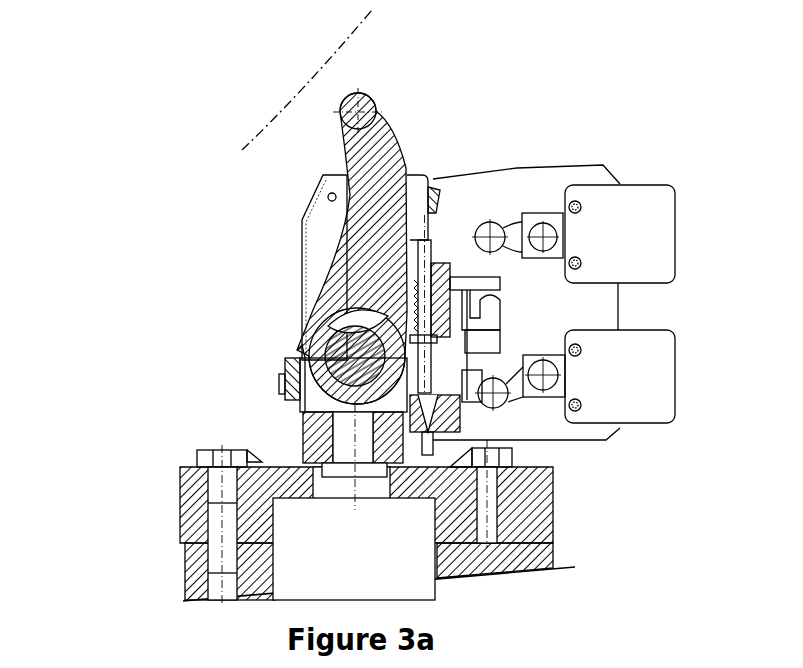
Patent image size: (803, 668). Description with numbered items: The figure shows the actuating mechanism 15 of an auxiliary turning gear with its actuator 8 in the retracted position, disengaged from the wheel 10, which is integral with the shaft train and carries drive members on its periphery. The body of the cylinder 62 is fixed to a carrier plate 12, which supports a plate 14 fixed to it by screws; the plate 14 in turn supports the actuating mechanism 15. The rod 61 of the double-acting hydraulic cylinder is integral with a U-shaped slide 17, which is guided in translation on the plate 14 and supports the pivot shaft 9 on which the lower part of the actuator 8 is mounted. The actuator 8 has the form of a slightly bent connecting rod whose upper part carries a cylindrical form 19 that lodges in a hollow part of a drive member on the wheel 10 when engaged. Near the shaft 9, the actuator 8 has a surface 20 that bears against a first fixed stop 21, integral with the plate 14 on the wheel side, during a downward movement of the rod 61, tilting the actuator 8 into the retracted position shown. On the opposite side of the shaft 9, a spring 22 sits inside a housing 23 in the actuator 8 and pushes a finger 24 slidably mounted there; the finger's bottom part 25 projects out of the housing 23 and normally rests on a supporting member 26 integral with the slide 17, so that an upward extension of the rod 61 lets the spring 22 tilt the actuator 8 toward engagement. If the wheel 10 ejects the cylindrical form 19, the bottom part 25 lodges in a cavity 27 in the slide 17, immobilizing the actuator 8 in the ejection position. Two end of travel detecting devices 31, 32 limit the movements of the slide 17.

The wheel 10 is at (355, 33).
The cylindrical form 19 is at (368, 102).
The actuator 8 is at (393, 163).
The finger 24 is at (428, 250).
The actuating mechanism 15 is at (139, 226).
The shaft 9 is at (335, 345).
The surface 20 is at (290, 356).
The first fixed stop 21 is at (283, 375).
The slide 17 is at (313, 420).
The rod 61 is at (343, 447).
The plate 14 is at (187, 503).
The carrier plate 12 is at (193, 573).
The spring 22 is at (437, 283).
The housing 23 is at (438, 320).
The bottom part 25 is at (428, 380).
The supporting member 26 is at (438, 415).
The cavity 27 is at (427, 397).
The end of travel detecting device 32 is at (573, 234).
The end of travel detecting device 31 is at (575, 376).
The body of the cylinder 62 is at (354, 549).